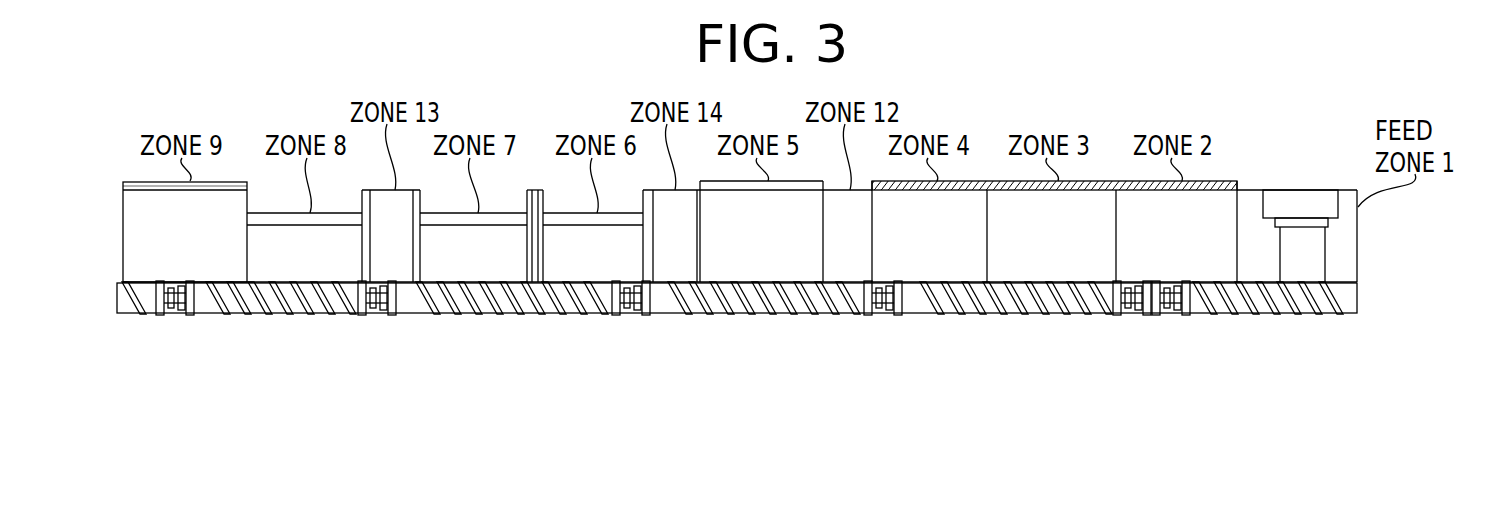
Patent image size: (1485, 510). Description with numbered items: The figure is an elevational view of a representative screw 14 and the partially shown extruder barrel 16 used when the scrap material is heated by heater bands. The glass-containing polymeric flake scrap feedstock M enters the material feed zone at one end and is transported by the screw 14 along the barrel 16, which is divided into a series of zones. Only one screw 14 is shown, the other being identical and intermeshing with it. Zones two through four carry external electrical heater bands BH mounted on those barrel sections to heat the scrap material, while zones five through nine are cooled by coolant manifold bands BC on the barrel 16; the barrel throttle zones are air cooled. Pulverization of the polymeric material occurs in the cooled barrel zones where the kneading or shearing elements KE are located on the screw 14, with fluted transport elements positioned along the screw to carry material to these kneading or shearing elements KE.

The screw 14 is at (1372, 296).
The extruder barrel 16 is at (1372, 250).
The electric heater bands BH is at (973, 180).
The coolant manifold bands BC is at (226, 181).
The kneading or shearing elements KE is at (171, 333).
The scrap feedstock M is at (1302, 185).